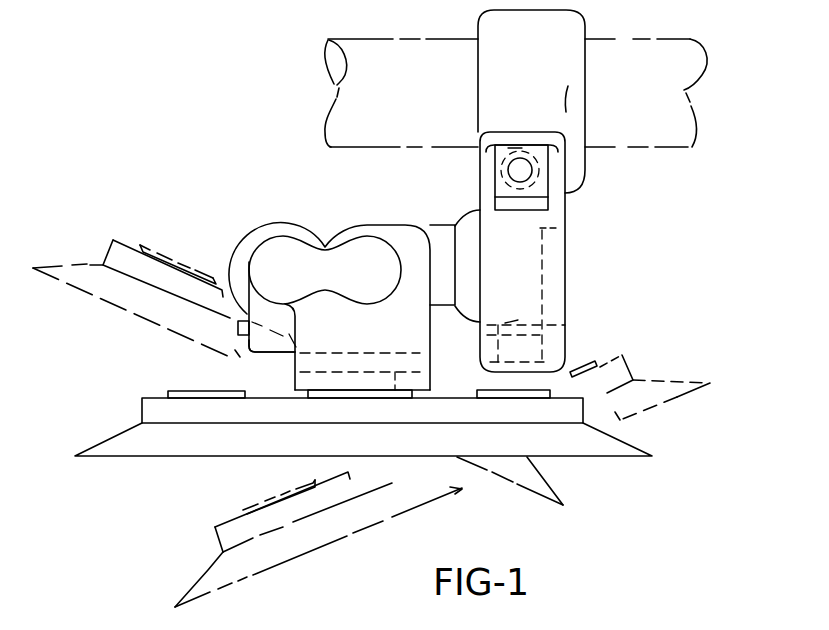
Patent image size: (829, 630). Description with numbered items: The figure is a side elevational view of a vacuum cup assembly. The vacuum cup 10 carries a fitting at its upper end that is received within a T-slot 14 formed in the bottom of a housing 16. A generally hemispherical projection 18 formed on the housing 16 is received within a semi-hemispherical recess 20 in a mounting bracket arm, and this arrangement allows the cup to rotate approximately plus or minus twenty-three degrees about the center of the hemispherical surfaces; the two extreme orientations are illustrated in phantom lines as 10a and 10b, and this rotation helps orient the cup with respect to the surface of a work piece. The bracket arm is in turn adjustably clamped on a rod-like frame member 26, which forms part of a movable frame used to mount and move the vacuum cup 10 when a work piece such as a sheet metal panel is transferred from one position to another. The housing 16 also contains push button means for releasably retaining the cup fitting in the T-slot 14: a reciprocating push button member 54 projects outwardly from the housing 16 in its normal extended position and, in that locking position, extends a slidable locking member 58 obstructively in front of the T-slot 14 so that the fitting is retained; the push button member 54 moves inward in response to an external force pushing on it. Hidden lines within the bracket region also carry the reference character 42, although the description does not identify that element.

The vacuum cup 10 is at (110, 440).
The phantom-line cup position 10a is at (97, 230).
The phantom-line cup position 10b is at (208, 570).
The T-slot 14 is at (381, 358).
The housing 16 is at (314, 234).
The hemispherical projection 18 is at (468, 215).
The semi-hemispherical recess 20 is at (530, 220).
The rod-like frame member 26 is at (363, 49).
The hidden fastener 42 is at (557, 338).
The push button member 54 is at (238, 328).
The slidable locking member 58 is at (280, 357).